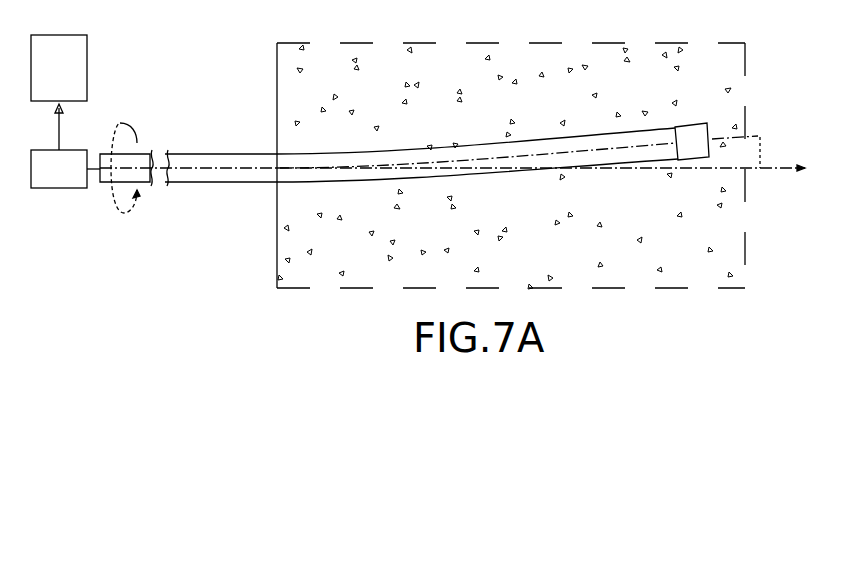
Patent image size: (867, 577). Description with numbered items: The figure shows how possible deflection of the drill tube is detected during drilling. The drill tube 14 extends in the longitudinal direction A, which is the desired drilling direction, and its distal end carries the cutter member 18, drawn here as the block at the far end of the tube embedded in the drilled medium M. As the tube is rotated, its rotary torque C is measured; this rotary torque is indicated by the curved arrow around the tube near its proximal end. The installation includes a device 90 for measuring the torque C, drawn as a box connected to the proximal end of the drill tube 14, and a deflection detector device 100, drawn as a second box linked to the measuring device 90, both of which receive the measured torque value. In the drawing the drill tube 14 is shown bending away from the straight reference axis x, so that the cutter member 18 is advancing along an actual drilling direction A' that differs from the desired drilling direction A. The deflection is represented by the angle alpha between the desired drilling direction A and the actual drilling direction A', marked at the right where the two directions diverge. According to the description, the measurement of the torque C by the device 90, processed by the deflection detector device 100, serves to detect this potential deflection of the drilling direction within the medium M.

The deflection detector device 100 is at (59, 68).
The torque measuring device 90 is at (65, 146).
The drill tube 14 is at (225, 154).
The cutter member 18 is at (690, 130).
The medium M is at (510, 52).
The rotary torque C is at (124, 123).
The axis x is at (459, 161).
The deflection angle alpha is at (769, 152).
The actual drilling direction A' is at (767, 116).
The longitudinal direction A is at (759, 189).